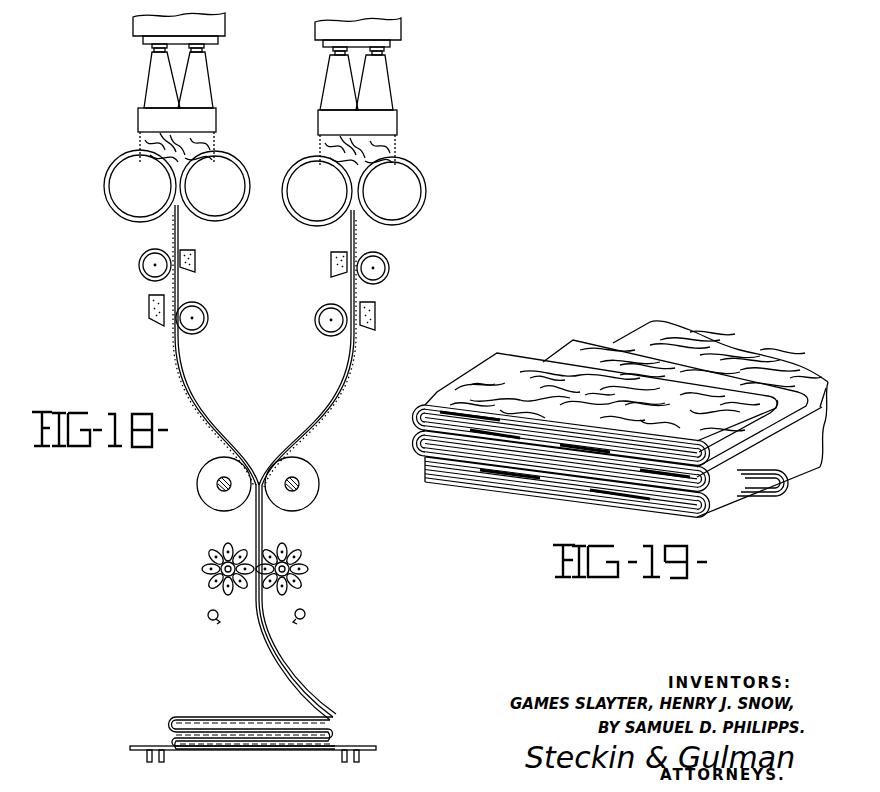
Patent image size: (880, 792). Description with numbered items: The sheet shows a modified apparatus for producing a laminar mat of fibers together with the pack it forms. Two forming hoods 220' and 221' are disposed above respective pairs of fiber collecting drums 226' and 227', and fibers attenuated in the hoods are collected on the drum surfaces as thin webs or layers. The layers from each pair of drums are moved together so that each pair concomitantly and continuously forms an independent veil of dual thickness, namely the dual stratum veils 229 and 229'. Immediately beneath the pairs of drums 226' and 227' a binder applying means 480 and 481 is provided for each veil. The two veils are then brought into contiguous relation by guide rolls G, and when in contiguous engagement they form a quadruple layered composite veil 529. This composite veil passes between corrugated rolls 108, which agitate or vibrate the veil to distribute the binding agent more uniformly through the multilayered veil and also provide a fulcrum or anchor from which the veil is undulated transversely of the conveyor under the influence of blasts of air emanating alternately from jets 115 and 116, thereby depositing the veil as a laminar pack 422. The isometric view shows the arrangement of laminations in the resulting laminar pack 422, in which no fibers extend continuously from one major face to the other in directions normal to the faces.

In FIG. 18, the forming hood 220' is at (202, 87).
In FIG. 18, the forming hood 221' is at (383, 91).
In FIG. 18, the fiber collecting drum 226' is at (203, 182).
In FIG. 18, the fiber collecting drum 227' is at (338, 197).
In FIG. 18, the dual stratum veil 229 is at (169, 346).
In FIG. 18, the dual stratum veil 229' is at (352, 348).
In FIG. 18, the binder applying means 480 is at (196, 262).
In FIG. 18, the binder applying means 481 is at (331, 263).
In FIG. 18, the guide rolls G is at (197, 488).
In FIG. 18, the composite veil 529 is at (268, 529).
In FIG. 18, the corrugated rolls 108 is at (204, 561).
In FIG. 18, the jet 115 is at (209, 621).
In FIG. 18, the jet 116 is at (296, 620).
In FIG. 18, the laminar pack 422 is at (213, 717).
In FIG. 19, the laminar pack 422 is at (743, 504).